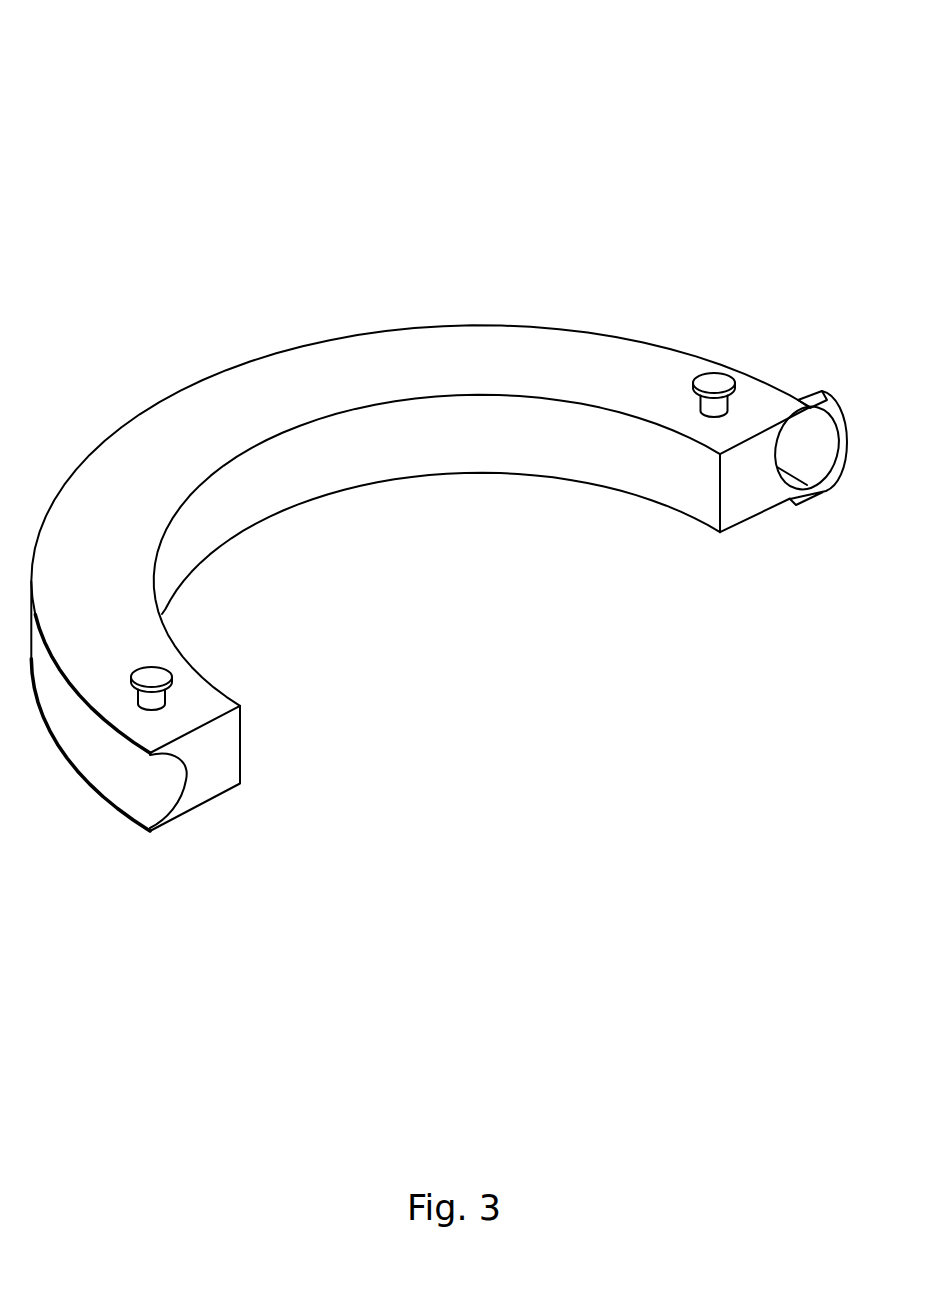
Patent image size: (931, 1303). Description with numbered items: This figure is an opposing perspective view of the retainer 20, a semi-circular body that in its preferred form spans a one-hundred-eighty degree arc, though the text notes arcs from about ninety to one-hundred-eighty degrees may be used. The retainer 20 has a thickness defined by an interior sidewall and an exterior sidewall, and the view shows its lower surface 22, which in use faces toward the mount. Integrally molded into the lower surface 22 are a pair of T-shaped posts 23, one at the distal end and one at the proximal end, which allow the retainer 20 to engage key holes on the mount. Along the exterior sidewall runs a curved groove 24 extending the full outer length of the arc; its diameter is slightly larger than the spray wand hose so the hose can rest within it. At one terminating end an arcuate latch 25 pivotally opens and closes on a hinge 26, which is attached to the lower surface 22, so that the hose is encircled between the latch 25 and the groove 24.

The retainer 20 is at (116, 113).
The lower surface 22 is at (248, 432).
The post 23 is at (158, 680).
The curved groove 24 is at (220, 775).
The latch 25 is at (820, 390).
The hinge 26 is at (802, 402).